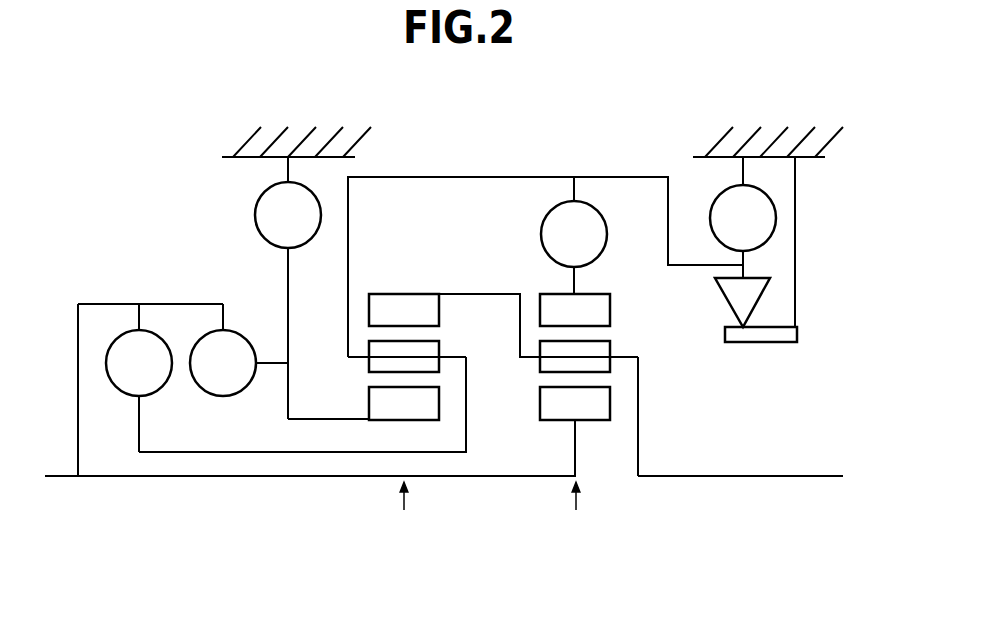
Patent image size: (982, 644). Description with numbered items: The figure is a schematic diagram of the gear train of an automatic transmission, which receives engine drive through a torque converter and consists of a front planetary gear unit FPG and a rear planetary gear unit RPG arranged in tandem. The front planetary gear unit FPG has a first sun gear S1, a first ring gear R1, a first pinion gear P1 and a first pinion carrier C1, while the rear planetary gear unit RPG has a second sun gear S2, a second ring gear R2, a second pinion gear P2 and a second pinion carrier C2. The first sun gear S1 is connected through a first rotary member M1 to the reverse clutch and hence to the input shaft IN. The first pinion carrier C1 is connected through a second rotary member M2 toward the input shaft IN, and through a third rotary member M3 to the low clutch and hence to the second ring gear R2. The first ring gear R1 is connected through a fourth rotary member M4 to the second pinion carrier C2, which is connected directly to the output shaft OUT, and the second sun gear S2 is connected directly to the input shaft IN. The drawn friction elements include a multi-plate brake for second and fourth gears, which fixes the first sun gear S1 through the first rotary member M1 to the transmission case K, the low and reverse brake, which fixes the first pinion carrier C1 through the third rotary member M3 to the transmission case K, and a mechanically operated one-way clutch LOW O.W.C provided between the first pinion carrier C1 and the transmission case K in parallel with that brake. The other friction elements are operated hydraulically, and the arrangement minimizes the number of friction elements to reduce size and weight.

The transmission case K is at (337, 157).
The one-way clutch LOW O.W.C is at (789, 251).
The first rotary member M1 is at (328, 407).
The second rotary member M2 is at (302, 404).
The third rotary member M3 is at (545, 267).
The fourth rotary member M4 is at (538, 314).
The first ring gear R1 is at (404, 310).
The first pinion gear P1 is at (438, 341).
The first pinion carrier C1 is at (458, 357).
The first sun gear S1 is at (404, 403).
The second ring gear R2 is at (575, 310).
The second pinion gear P2 is at (609, 341).
The second pinion carrier C2 is at (628, 357).
The second sun gear S2 is at (575, 431).
The input shaft IN is at (310, 390).
The output shaft OUT is at (740, 465).
The front planetary gear unit FPG is at (403, 509).
The rear planetary gear unit RPG is at (574, 509).